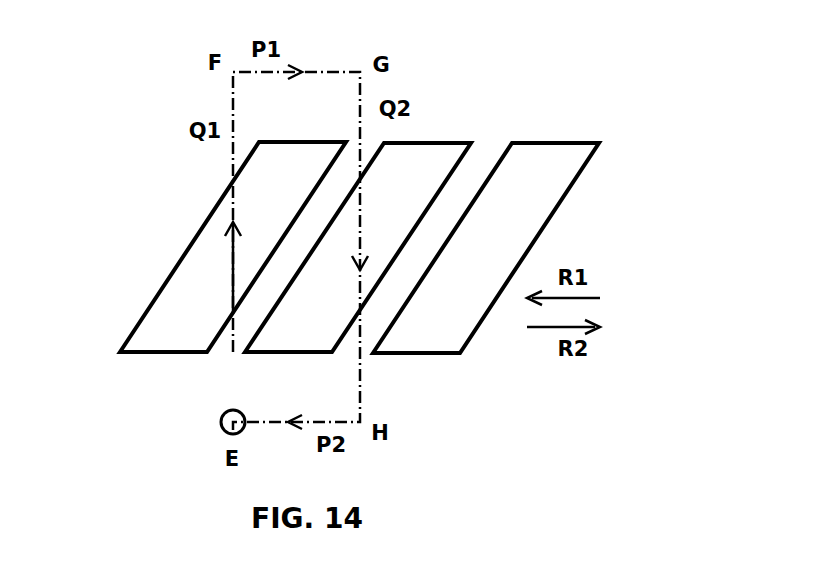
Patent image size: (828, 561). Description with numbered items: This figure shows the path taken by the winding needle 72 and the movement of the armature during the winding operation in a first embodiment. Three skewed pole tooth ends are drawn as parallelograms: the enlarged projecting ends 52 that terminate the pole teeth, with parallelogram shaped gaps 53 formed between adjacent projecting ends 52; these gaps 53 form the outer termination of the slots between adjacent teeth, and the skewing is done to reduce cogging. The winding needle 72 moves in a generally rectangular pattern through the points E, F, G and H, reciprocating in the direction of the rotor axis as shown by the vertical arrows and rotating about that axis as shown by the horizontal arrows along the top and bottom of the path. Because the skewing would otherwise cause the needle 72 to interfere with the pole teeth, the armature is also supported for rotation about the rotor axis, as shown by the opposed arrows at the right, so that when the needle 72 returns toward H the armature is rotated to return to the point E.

The projecting parallelogram shaped end 52 is at (422, 157).
The parallelogram shaped gap 53 is at (262, 297).
The winding needle 72 is at (220, 423).